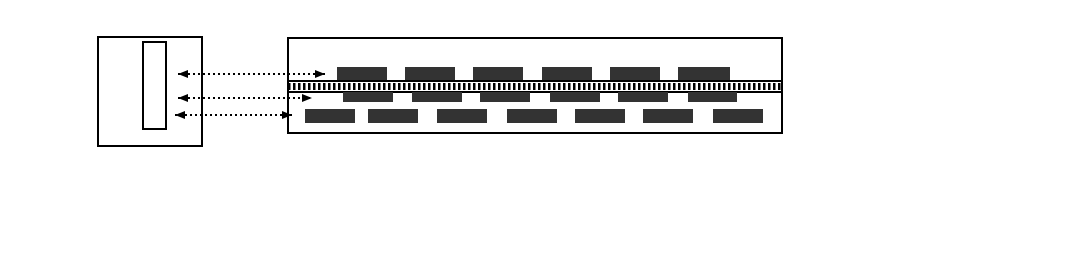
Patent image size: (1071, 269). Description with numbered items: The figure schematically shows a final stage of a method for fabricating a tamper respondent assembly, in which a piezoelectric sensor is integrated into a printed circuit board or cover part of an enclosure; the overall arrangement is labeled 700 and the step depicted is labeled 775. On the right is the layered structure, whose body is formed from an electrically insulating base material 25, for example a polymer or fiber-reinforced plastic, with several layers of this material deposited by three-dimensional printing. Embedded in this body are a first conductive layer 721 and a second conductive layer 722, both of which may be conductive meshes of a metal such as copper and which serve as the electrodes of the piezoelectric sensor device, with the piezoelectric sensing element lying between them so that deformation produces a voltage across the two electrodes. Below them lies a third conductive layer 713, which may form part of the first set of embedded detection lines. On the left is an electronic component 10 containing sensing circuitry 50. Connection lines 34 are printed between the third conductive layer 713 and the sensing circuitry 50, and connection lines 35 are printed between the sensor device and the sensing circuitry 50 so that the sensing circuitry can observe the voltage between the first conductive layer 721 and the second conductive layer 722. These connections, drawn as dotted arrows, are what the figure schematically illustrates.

The display system 700 is at (898, 248).
The light sensing device 775 is at (86, 105).
The electronic component 10 is at (127, 137).
The sensing circuitry 50 is at (153, 130).
The connection lines 35 is at (217, 97).
The connection lines 34 is at (245, 116).
The base material 25 is at (567, 122).
The third conductive layer 713 is at (403, 115).
The second conductive layer 722 is at (730, 68).
The first conductive layer 721 is at (737, 96).